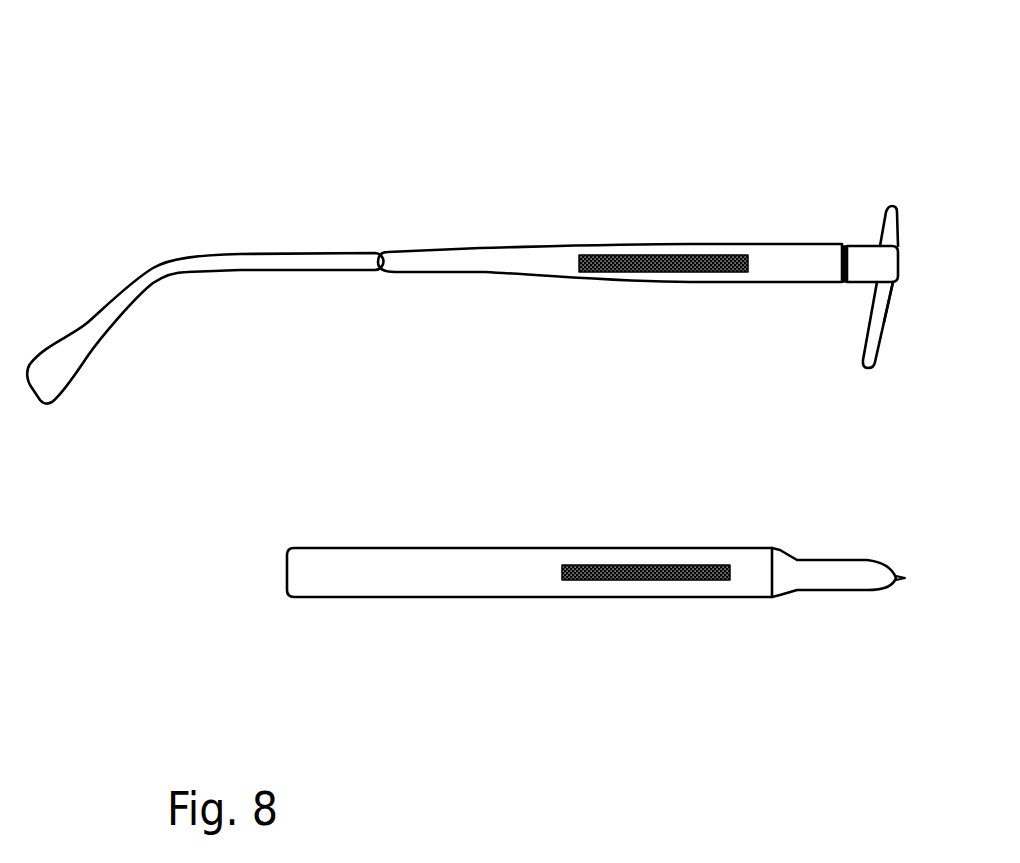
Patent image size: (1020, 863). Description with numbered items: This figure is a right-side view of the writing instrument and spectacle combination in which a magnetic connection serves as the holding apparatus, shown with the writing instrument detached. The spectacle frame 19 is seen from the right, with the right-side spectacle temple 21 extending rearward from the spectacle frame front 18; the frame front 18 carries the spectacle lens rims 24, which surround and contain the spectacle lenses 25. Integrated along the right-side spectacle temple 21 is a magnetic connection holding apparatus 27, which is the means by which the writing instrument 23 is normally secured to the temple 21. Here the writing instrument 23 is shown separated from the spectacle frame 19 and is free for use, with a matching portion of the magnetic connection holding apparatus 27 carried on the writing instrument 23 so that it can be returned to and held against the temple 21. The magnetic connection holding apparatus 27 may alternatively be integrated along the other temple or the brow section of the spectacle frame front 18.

The spectacle frame 19 is at (471, 207).
The spectacle frame front 18 is at (855, 230).
The right-side spectacle temple 21 is at (449, 262).
The magnetic connection holding apparatus 27 is at (650, 270).
The writing instrument 23 is at (438, 567).
The spectacle lens rims 24 is at (868, 342).
The spectacle lenses 25 is at (885, 333).